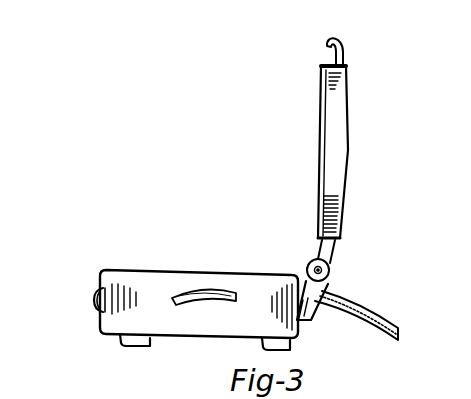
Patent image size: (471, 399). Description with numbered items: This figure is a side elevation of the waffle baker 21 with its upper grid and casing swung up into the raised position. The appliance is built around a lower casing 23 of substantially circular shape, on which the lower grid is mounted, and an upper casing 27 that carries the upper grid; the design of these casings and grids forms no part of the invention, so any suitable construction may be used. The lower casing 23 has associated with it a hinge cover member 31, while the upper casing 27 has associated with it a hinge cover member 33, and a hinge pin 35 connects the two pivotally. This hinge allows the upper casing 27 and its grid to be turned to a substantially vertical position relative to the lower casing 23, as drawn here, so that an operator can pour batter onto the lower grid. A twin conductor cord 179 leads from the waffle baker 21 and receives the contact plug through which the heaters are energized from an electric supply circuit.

The waffle baker 21 is at (68, 301).
The lower casing 23 is at (103, 327).
The upper casing 27 is at (346, 223).
The hinge cover member 31 is at (306, 319).
The hinge cover member 33 is at (331, 265).
The hinge pin 35 is at (323, 275).
The twin conductor cord 179 is at (366, 330).